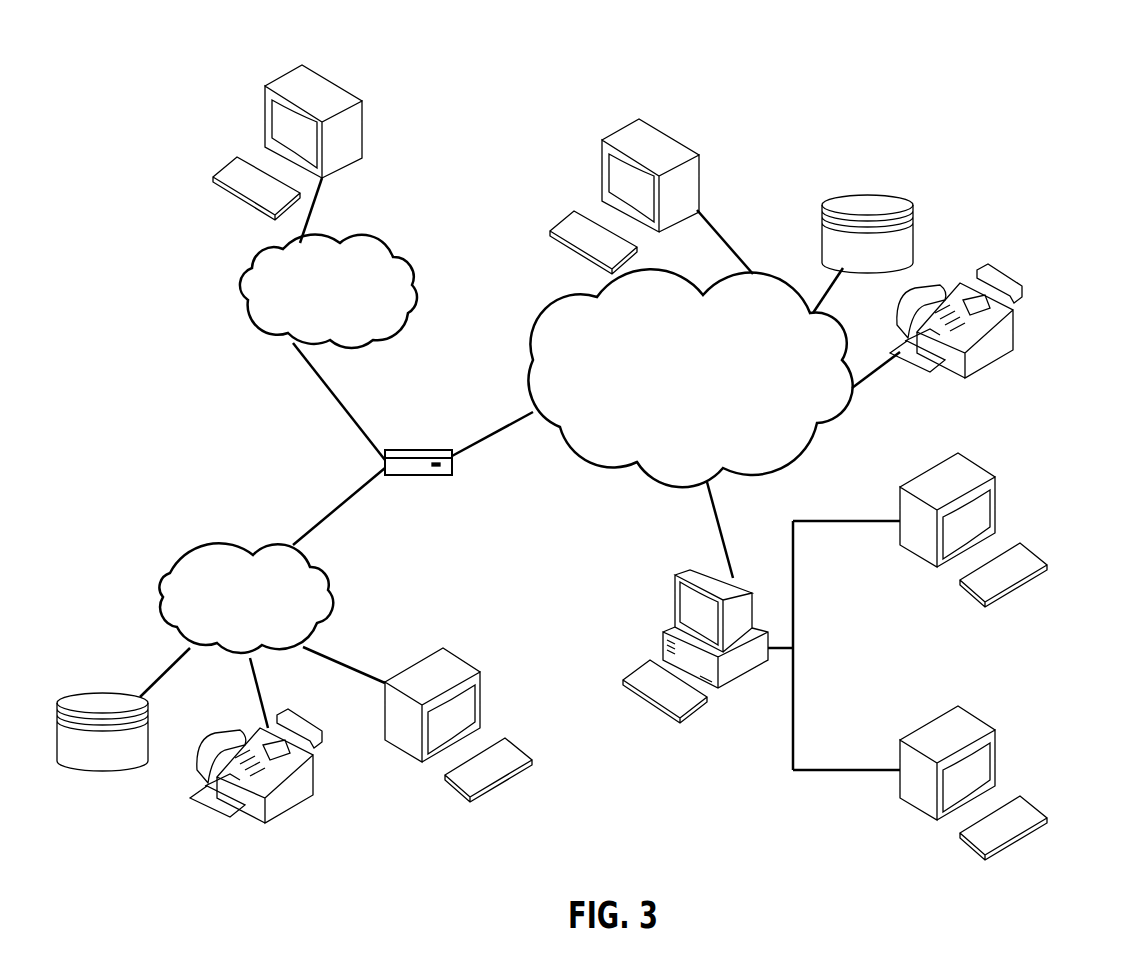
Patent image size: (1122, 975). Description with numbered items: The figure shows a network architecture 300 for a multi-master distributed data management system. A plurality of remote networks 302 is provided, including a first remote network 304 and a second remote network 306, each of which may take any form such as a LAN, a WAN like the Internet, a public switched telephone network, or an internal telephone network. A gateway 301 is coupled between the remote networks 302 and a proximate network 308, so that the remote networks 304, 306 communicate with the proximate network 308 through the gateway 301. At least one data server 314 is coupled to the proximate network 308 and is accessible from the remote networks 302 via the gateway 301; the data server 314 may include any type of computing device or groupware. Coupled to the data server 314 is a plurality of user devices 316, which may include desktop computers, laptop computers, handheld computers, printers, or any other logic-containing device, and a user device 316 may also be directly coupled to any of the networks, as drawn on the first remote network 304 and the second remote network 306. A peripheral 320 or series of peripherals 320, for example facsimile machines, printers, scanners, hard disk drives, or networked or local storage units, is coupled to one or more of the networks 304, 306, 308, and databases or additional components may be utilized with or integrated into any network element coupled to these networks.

The network architecture 300 is at (617, 35).
The gateway 301 is at (418, 448).
The remote networks 302 is at (226, 378).
The first remote network 304 is at (162, 572).
The second remote network 306 is at (414, 292).
The proximate network 308 is at (815, 443).
The data server 314 is at (672, 602).
The user devices 316 is at (363, 130).
The peripheral 320 is at (868, 195).